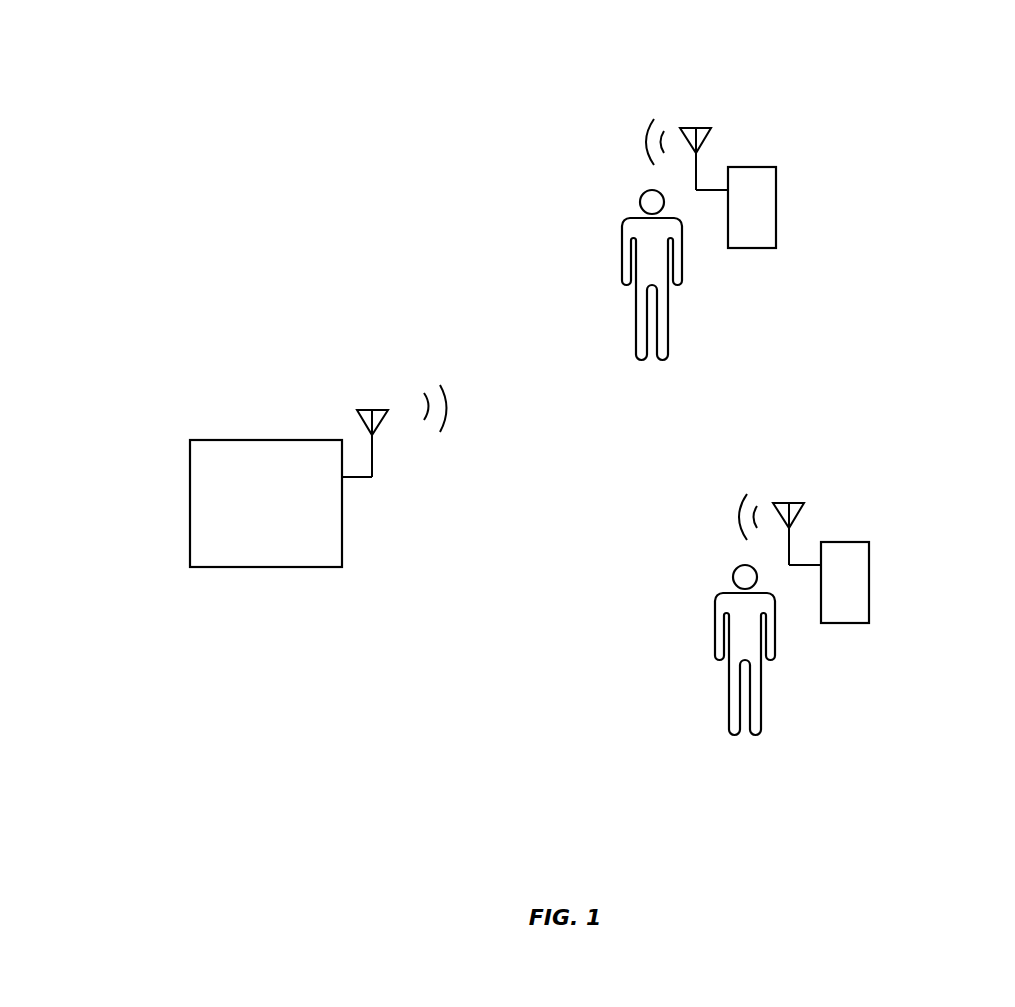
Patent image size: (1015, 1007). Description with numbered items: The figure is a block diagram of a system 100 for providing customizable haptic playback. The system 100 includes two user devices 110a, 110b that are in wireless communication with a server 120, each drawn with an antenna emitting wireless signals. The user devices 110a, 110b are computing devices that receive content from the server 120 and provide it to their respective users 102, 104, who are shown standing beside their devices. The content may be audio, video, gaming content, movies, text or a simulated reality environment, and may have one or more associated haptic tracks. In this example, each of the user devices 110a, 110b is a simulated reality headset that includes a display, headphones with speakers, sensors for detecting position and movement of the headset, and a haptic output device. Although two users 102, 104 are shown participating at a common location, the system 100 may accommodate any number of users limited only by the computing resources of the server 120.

The system 100 is at (175, 92).
The user 102 is at (718, 328).
The user 104 is at (808, 650).
The user device 110a is at (776, 193).
The user device 110b is at (871, 558).
The server 120 is at (284, 531).